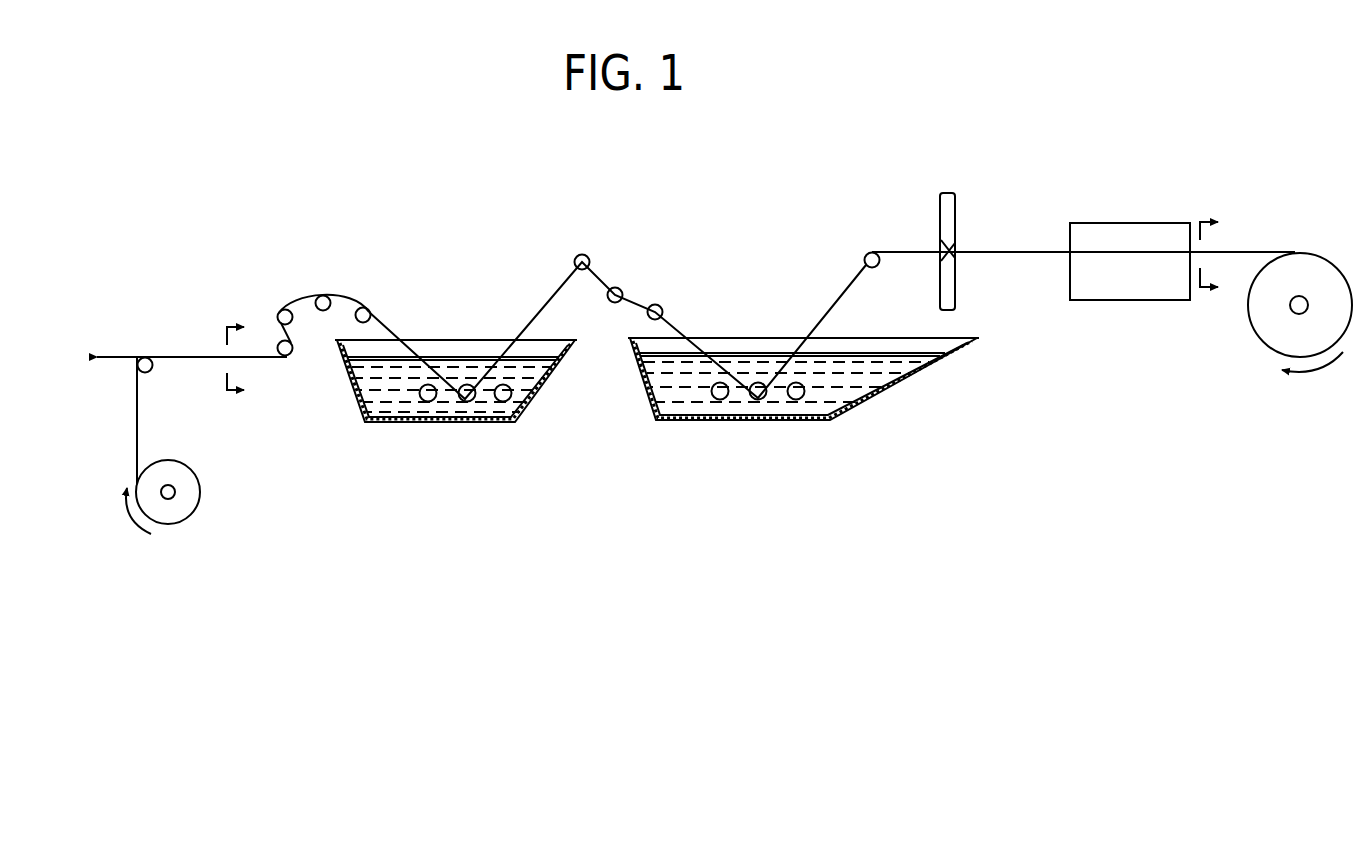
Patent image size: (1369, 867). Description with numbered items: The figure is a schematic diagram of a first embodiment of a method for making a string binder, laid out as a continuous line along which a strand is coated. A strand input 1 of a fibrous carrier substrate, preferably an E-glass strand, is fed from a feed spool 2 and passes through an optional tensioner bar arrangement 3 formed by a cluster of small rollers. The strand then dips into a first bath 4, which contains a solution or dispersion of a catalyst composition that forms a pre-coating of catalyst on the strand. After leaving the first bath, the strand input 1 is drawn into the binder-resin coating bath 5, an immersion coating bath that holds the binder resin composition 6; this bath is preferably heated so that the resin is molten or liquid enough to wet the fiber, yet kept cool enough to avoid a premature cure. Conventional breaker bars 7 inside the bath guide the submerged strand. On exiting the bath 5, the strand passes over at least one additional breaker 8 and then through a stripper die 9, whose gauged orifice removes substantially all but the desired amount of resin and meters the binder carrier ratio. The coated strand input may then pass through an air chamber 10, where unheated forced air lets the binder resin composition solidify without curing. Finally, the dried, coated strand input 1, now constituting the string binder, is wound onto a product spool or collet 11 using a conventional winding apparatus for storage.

The strand input 1 is at (181, 357).
The feed spool 2 is at (190, 502).
The tensioner bar arrangement 3 is at (280, 312).
The first bath 4 is at (378, 395).
The binder-resin coating bath 5 is at (910, 372).
The binder resin composition 6 is at (840, 381).
The breaker bars 7 is at (758, 399).
The additional breaker 8 is at (865, 253).
The stripper die 9 is at (948, 193).
The air chamber 10 is at (1103, 222).
The product spool or collet 11 is at (1252, 330).